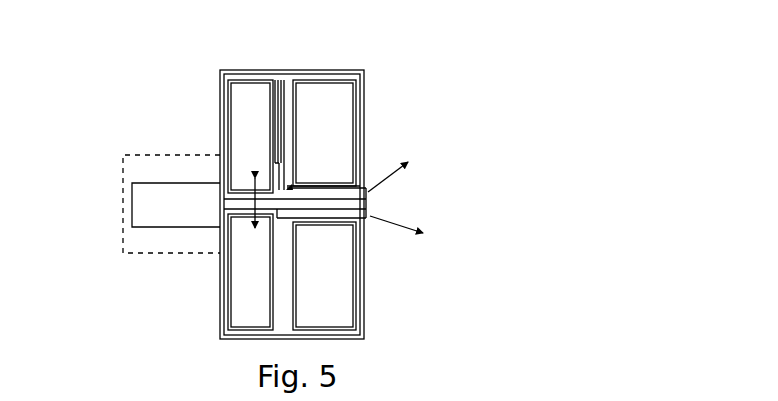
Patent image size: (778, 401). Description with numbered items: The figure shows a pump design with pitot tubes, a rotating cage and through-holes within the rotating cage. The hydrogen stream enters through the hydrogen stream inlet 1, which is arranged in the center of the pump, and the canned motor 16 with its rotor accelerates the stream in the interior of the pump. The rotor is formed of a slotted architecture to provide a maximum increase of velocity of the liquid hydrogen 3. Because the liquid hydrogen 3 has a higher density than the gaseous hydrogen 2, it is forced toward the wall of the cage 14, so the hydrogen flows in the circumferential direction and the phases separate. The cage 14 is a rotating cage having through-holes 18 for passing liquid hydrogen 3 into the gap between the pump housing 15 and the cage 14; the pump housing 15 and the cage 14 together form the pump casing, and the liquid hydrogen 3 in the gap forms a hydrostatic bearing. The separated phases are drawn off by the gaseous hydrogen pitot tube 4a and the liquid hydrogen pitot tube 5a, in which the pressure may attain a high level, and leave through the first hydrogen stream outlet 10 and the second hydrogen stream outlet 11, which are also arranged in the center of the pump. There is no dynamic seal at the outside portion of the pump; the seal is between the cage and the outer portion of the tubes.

The hydrogen stream inlet 1 is at (372, 204).
The gaseous hydrogen 2 is at (355, 145).
The liquid hydrogen 3 is at (219, 107).
The gaseous hydrogen pitot tube/outlet 4a is at (282, 145).
The liquid hydrogen pitot tube/outlet 5a is at (275, 83).
The first (gaseous) hydrogen stream outlet 10 is at (408, 166).
The second (liquid) hydrogen stream outlet 11 is at (419, 236).
The cage 14 is at (363, 90).
The pump housing 15 is at (325, 72).
The canned motor 16 is at (143, 207).
The through-holes 18 is at (262, 328).